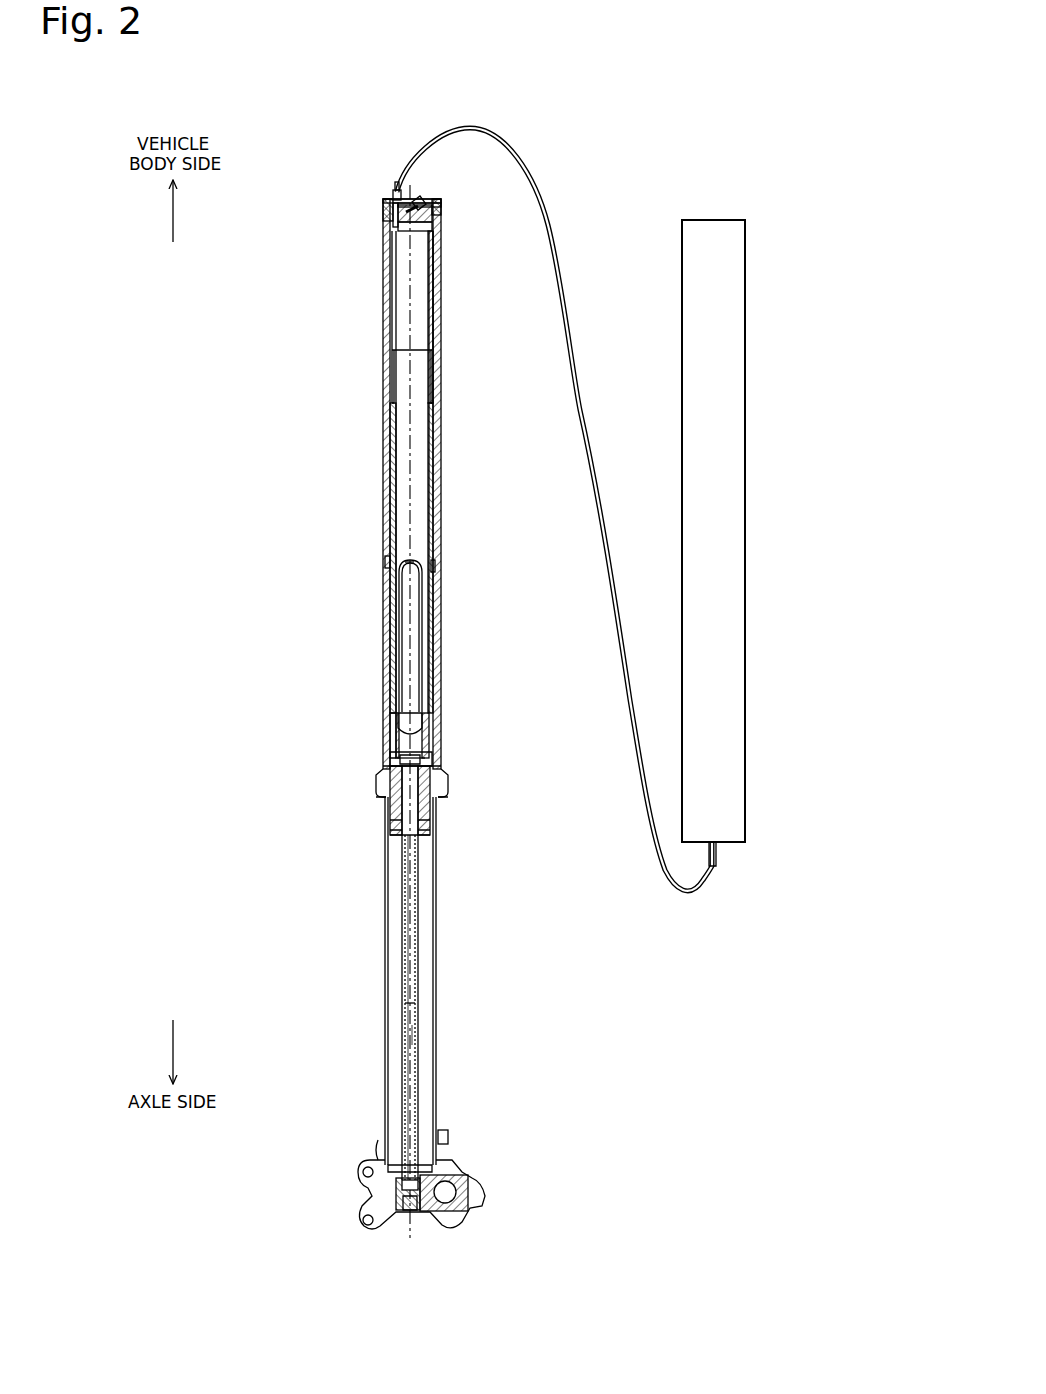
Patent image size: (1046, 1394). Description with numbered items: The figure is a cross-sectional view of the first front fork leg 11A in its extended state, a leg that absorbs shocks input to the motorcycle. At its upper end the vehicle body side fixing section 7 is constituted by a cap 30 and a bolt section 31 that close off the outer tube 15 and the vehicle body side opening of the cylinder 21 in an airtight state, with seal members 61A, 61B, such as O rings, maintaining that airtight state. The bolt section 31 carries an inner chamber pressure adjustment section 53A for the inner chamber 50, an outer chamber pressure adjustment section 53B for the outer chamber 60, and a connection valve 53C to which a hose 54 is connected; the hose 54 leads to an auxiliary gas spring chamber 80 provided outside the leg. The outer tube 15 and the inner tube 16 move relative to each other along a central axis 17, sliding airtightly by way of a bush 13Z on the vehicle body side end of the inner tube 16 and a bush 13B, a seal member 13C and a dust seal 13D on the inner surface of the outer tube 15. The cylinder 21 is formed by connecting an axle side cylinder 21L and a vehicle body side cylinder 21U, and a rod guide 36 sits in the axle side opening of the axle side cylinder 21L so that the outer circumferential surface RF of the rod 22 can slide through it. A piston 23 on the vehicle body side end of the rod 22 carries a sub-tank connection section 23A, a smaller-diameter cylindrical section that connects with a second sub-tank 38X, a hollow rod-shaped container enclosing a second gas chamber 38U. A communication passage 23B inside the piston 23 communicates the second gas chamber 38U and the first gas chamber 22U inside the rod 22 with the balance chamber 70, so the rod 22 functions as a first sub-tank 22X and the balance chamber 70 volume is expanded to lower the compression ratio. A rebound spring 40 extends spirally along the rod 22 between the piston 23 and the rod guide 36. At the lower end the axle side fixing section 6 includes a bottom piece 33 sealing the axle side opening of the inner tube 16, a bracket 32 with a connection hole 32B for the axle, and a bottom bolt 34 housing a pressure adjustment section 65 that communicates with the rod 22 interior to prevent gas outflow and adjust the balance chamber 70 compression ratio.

The first front fork leg 11A is at (302, 197).
The hose 54 is at (553, 233).
The auxiliary gas spring chamber 80 is at (757, 266).
The outer tube 15 is at (383, 276).
The inner tube 16 is at (384, 1062).
The central axis 17 is at (412, 283).
The cap 30 is at (384, 204).
The bolt section 31 is at (386, 216).
The seal member 61A is at (438, 218).
The seal member 61B is at (440, 205).
The vehicle body side fixing section 7 is at (444, 210).
The connection valve 53C is at (394, 198).
The inner chamber pressure adjustment section 53A is at (421, 203).
The outer chamber pressure adjustment section 53B is at (419, 203).
The inner chamber 50 is at (424, 322).
The cylinder 21 is at (503, 366).
The vehicle body side cylinder 21U is at (432, 338).
The axle side cylinder 21L is at (432, 437).
The second sub-tank 38X is at (418, 563).
The bush 13Z is at (434, 571).
The second gas chamber 38U is at (412, 594).
The piston 23 is at (424, 720).
The sub-tank connection section 23A is at (394, 724).
The communication passage 23B is at (424, 760).
The balance chamber 70 is at (392, 757).
The bush 13B is at (441, 764).
The seal member 13C is at (442, 779).
The dust seal 13D is at (441, 800).
The rebound spring 40 is at (396, 791).
The rod guide 36 is at (424, 838).
The outer chamber 60 is at (423, 894).
The outer circumferential surface RF is at (418, 937).
The rod 22 is at (419, 981).
The first gas chamber 22U is at (413, 1003).
The first sub-tank 22X is at (420, 1035).
The axle side fixing section 6 is at (485, 1180).
The bottom piece 33 is at (433, 1162).
The bracket 32 is at (440, 1216).
The connection hole 32B is at (460, 1190).
The bottom bolt 34 is at (398, 1197).
The pressure adjustment section 65 is at (406, 1212).